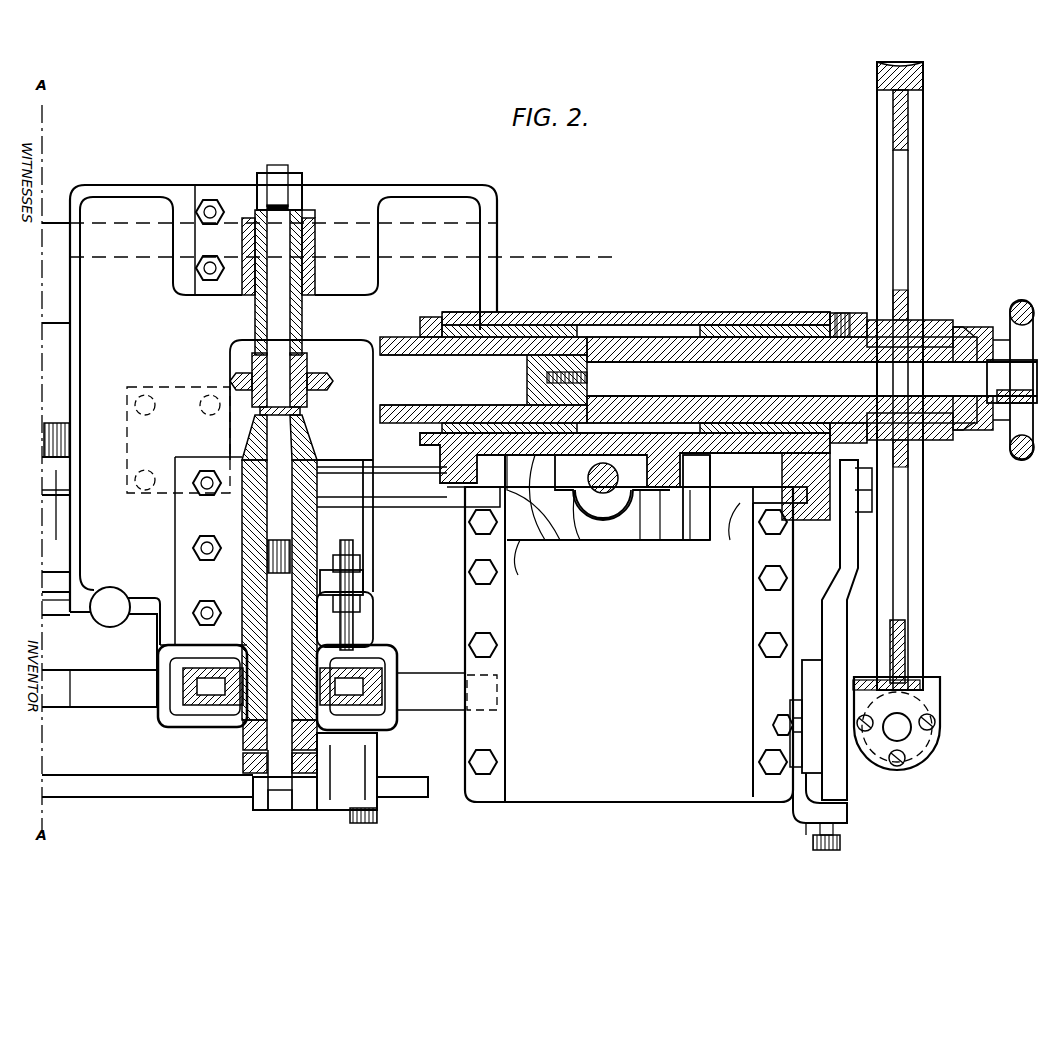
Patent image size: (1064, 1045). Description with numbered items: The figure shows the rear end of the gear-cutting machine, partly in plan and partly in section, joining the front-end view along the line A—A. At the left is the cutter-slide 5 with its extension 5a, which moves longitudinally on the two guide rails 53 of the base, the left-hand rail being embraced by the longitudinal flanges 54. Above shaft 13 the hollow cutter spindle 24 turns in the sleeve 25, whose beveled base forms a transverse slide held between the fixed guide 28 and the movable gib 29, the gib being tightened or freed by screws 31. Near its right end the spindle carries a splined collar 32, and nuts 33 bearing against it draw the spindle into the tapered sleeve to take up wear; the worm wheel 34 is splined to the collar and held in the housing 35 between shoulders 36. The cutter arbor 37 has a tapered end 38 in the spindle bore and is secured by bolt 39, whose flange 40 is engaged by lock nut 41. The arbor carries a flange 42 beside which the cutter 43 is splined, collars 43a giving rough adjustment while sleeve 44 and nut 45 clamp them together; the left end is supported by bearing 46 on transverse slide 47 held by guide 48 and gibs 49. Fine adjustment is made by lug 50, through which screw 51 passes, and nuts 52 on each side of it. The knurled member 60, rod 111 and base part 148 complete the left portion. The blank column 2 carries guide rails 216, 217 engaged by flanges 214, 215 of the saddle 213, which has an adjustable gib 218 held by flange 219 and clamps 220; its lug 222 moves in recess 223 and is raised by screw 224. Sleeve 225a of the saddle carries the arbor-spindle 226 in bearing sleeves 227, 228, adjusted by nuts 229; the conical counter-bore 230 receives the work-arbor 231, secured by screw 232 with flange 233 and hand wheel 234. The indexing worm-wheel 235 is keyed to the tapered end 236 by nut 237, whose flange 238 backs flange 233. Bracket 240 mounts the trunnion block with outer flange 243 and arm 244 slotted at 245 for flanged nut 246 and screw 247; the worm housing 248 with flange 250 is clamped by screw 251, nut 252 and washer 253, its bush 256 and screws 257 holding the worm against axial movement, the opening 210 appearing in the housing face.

The column 2 is at (629, 628).
The cutter-slide 5 is at (331, 446).
The frame extension 5a is at (468, 200).
The shaft 13 is at (92, 702).
The hollow cutter spindle 24 is at (374, 483).
The sleeve 25 is at (317, 496).
The fixed guide 28 is at (290, 556).
The movable gib 29 is at (212, 517).
The screws 31 is at (195, 605).
The collar 32 is at (385, 656).
The nuts 33 is at (352, 738).
The worm wheel 34 is at (180, 690).
The housing 35 is at (168, 728).
The shoulders 36 is at (235, 716).
The cutter arbor 37 is at (282, 250).
The tapered right hand end 38 is at (322, 500).
The bolt 39 is at (268, 803).
The flange 40 is at (290, 800).
The lock nut 41 is at (244, 772).
The flange 42 is at (303, 416).
The cutter 43 is at (322, 378).
The collars 43a is at (248, 380).
The sleeve 44 is at (303, 330).
The nut 45 is at (291, 174).
The bearing 46 is at (308, 222).
The transverse slide 47 is at (248, 218).
The guide 48 is at (320, 196).
The gibs 49 is at (213, 203).
The lug 50 is at (365, 582).
The screw 51 is at (352, 548).
The nuts 52 is at (360, 560).
The guide rails 53 is at (56, 520).
The longitudinal flanges 54 is at (52, 490).
The knurled nut 60 is at (44, 435).
The rod 111 is at (52, 598).
The base 148 is at (128, 798).
The opening 210 is at (905, 732).
The blank arbor carrier or saddle 213 is at (525, 541).
The flange 214 is at (762, 503).
The flange 215 is at (520, 477).
The guide rail 216 is at (782, 478).
The guide rail 217 is at (540, 495).
The adjustable gib 218 is at (688, 542).
The flange 219 is at (660, 541).
The clamps 220 is at (735, 522).
The lug 222 is at (580, 541).
The recess 223 is at (640, 540).
The screw 224 is at (606, 494).
The sleeve 225a is at (655, 318).
The arbor-spindle 226 is at (690, 337).
The bearing sleeve 227 is at (800, 320).
The bearing sleeve 228 is at (520, 331).
The nuts 229 is at (843, 313).
The conical counter-bore 230 is at (620, 356).
The work-arbor 231 is at (453, 380).
The screw 232 is at (1015, 328).
The flange 233 is at (1005, 405).
The hand wheel 234 is at (1005, 338).
The indexing worm-wheel 235 is at (930, 180).
The tapered end 236 is at (938, 372).
The nut 237 is at (973, 336).
The inwardly extending flange 238 is at (978, 432).
The bracket 240 is at (858, 585).
The outer flange 243 is at (802, 680).
The arm 244 is at (795, 808).
The slot 245 is at (850, 820).
The flanged nut 246 is at (842, 840).
The screw 247 is at (812, 843).
The worm housing 248 is at (938, 745).
The flange 250 is at (870, 690).
The screw 251 is at (773, 722).
The nut 252 is at (796, 730).
The washer 253 is at (800, 748).
The bush 256 is at (872, 720).
The screws 257 is at (935, 720).